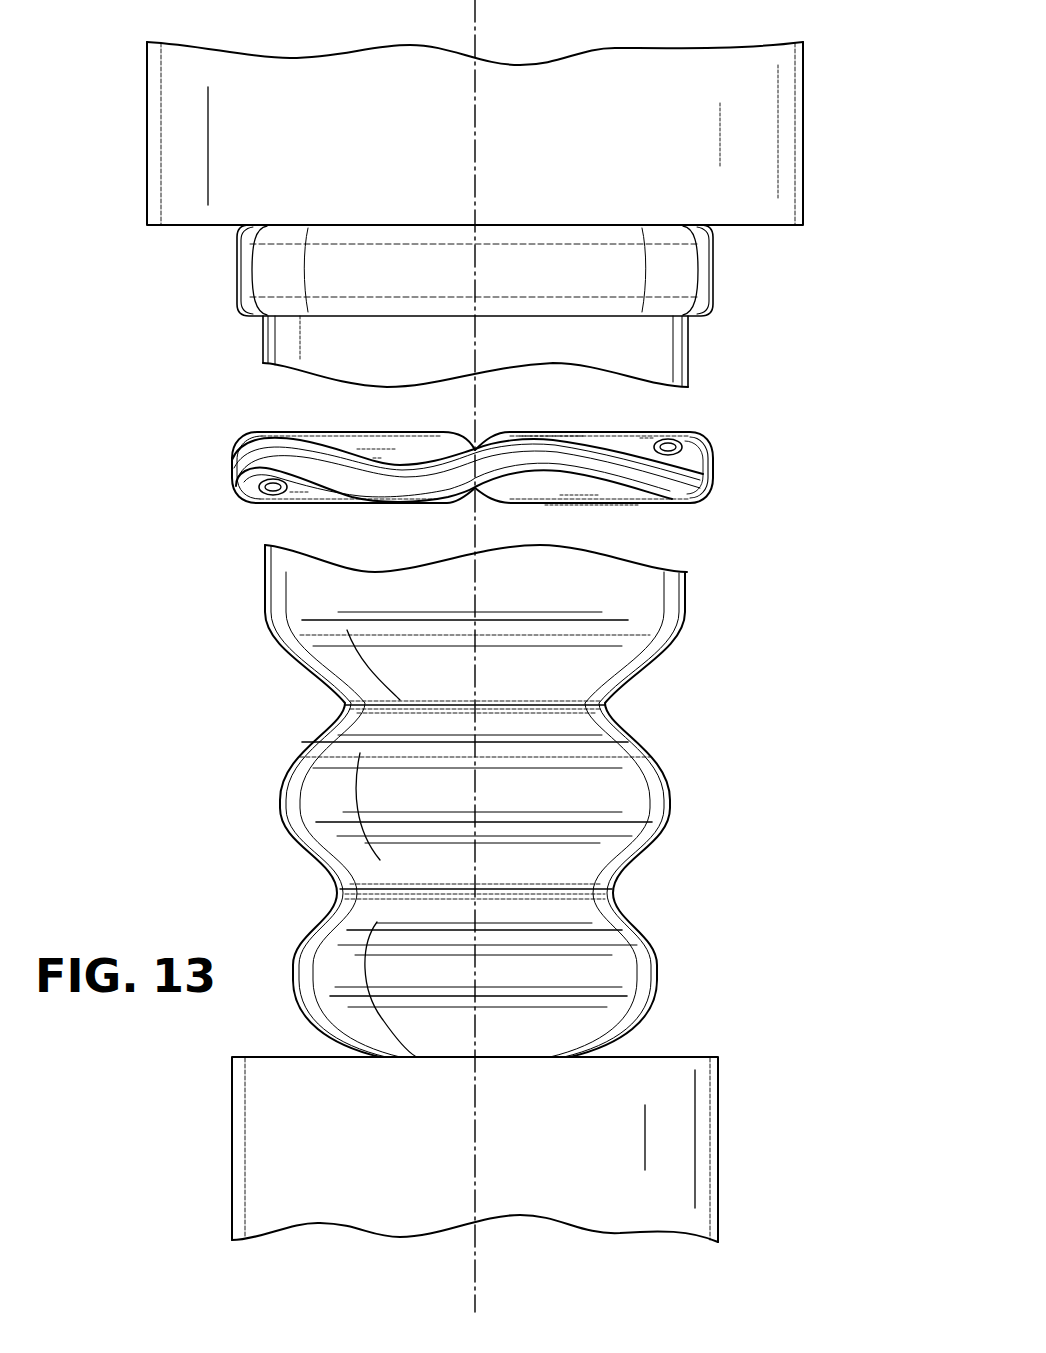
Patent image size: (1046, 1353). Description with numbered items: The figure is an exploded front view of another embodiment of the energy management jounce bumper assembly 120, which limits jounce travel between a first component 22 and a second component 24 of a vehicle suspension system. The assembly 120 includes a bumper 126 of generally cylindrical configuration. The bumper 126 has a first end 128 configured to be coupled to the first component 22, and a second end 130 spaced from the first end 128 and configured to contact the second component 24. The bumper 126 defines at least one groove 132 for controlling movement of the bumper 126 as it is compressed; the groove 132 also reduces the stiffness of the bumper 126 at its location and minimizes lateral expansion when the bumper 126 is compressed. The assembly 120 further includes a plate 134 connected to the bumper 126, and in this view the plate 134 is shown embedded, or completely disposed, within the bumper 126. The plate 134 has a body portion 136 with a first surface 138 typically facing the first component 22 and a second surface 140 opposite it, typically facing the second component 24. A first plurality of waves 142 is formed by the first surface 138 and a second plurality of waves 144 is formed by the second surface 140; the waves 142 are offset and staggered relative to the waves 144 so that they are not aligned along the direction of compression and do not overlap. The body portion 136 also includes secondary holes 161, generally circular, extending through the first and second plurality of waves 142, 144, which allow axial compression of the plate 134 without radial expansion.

The first component 22 is at (748, 191).
The second component 24 is at (683, 1125).
The energy management jounce bumper assembly 120 is at (527, 801).
The bumper 126 is at (649, 813).
The first end 128 is at (730, 261).
The second end 130 is at (657, 1012).
The groove 132 is at (315, 897).
The plate 134 is at (523, 468).
The body portion 136 is at (712, 474).
The first surface 138 is at (620, 446).
The second surface 140 is at (592, 490).
The first plurality of waves 142 is at (547, 433).
The second plurality of waves 144 is at (373, 496).
The secondary holes 161 is at (274, 490).